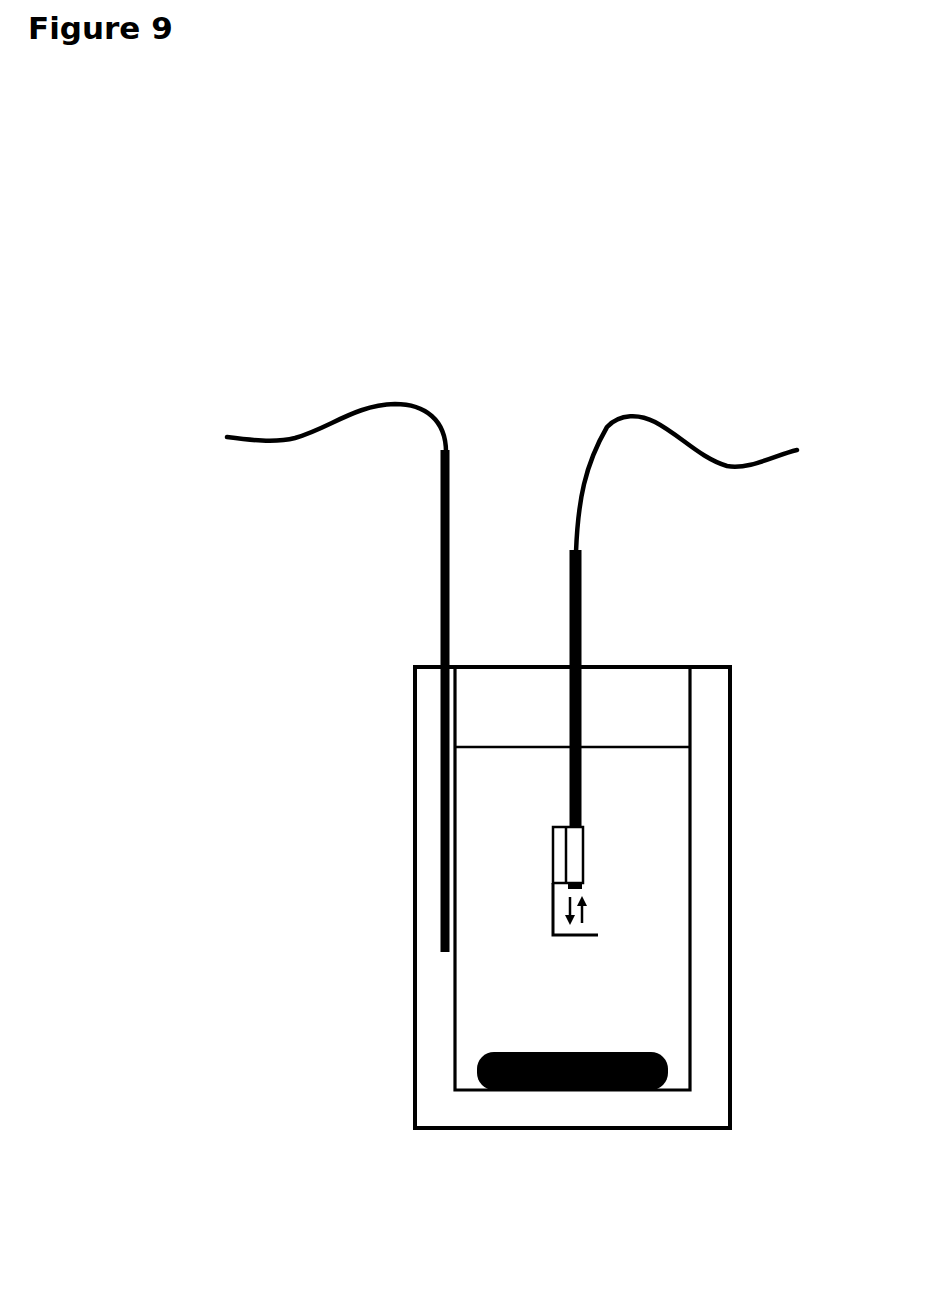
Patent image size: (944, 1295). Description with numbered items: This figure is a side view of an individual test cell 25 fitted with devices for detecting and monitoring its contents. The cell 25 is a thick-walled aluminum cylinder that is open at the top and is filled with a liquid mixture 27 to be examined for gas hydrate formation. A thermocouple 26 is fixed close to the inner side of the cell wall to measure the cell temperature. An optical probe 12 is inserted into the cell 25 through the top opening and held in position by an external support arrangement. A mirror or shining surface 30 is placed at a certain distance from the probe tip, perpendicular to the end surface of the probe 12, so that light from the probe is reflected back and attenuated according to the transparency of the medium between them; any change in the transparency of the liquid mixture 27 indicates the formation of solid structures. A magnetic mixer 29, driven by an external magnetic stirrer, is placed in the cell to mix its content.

The optical probe 12 is at (582, 600).
The test cell 25 is at (427, 681).
The thermocouple 26 is at (443, 527).
The liquid mixture 27 is at (648, 812).
The magnetic mixer 29 is at (478, 1073).
The mirror or shining surface 30 is at (597, 935).